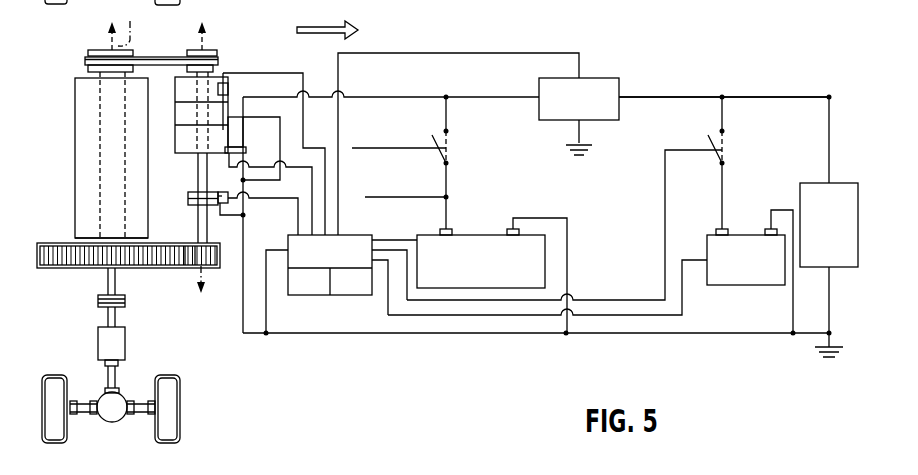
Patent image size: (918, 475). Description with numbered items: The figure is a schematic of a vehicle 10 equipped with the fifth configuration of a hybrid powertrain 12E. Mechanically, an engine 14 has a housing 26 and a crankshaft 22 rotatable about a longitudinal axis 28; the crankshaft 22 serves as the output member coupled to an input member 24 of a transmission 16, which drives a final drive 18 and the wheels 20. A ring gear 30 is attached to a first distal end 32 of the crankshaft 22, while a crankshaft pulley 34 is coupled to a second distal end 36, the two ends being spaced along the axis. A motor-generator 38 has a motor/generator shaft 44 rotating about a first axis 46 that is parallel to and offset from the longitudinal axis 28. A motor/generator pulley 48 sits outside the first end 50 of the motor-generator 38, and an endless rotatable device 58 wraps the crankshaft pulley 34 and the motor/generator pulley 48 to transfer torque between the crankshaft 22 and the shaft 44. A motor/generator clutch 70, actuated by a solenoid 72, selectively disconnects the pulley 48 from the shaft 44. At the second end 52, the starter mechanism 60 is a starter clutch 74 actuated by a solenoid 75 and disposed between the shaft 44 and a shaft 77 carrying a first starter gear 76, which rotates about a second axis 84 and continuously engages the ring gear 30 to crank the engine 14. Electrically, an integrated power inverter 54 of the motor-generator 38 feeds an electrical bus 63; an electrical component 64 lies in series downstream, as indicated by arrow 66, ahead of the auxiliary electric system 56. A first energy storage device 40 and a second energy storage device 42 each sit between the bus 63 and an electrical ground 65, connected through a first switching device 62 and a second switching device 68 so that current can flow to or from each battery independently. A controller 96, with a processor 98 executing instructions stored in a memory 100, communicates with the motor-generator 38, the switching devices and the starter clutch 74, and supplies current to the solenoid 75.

The vehicle 10 is at (224, 374).
The powertrain 12E is at (772, 43).
The engine 14 is at (62, 165).
The transmission 16 is at (125, 344).
The final drive 18 is at (100, 392).
The wheels 20 is at (182, 410).
The crankshaft 22 is at (97, 117).
The input member 24 is at (117, 311).
The housing 26 is at (92, 197).
The longitudinal axis 28 is at (130, 23).
The ring gear 30 is at (58, 270).
The first distal end 32 is at (97, 238).
The crankshaft pulley 34 is at (97, 50).
The second distal end 36 is at (97, 75).
The motor-generator 38 is at (243, 57).
The first energy storage device 40 is at (479, 233).
The second energy storage device 42 is at (746, 288).
The motor/generator shaft 44 is at (205, 72).
The first axis 46 is at (198, 44).
The motor/generator pulley 48 is at (185, 65).
The first end 50 is at (224, 66).
The second end 52 is at (183, 155).
The integrated power inverter 54 is at (302, 96).
The auxiliary electric system 56 is at (832, 181).
The endless rotatable device 58 is at (88, 62).
The starter mechanism 60 is at (232, 253).
The first switching device 62 is at (458, 145).
The electrical bus 63 is at (682, 97).
The electrical component 64 is at (593, 78).
The electrical ground 65 is at (469, 334).
The arrow 66 is at (330, 26).
The second switching device 68 is at (733, 148).
The motor/generator clutch 70 is at (238, 126).
The solenoid 72 is at (231, 92).
The starter clutch 74 is at (180, 200).
The solenoid 75 is at (246, 214).
The first starter gear 76 is at (196, 272).
The shaft 77 is at (180, 270).
The second axis 84 is at (204, 298).
The controller 96 is at (341, 284).
The processor 98 is at (309, 282).
The memory 100 is at (351, 282).